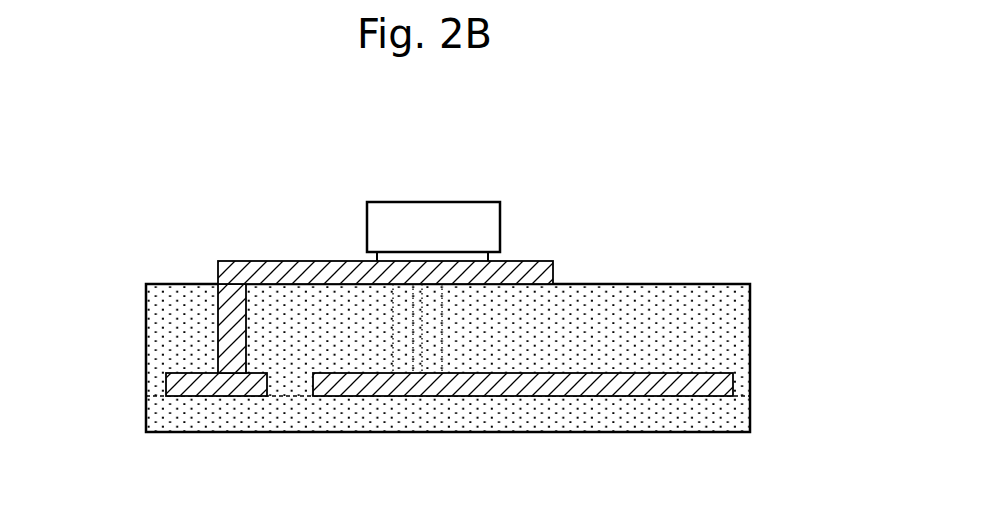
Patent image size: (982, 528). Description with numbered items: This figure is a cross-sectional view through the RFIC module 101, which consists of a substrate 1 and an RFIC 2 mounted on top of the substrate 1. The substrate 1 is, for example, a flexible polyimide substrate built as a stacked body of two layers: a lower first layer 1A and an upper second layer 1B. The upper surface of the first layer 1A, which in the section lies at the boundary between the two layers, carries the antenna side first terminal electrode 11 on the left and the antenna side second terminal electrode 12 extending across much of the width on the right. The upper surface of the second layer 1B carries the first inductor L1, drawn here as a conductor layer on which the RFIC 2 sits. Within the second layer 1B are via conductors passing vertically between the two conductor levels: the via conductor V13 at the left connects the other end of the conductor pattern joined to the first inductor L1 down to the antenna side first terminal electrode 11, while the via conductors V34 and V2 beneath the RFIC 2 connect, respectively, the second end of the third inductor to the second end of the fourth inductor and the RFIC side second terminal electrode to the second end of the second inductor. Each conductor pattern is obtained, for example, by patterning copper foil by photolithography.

The RFIC module 101 is at (760, 193).
The substrate 1 is at (511, 359).
The first layer 1A is at (484, 414).
The second layer 1B is at (738, 341).
The RFIC 2 is at (432, 217).
The antenna side first terminal electrode 11 is at (217, 388).
The antenna side second terminal electrode 12 is at (690, 387).
The via conductor V13 is at (227, 333).
The via conductor V34 is at (397, 338).
The via conductor V2 is at (435, 350).
The first inductor L1 is at (553, 271).